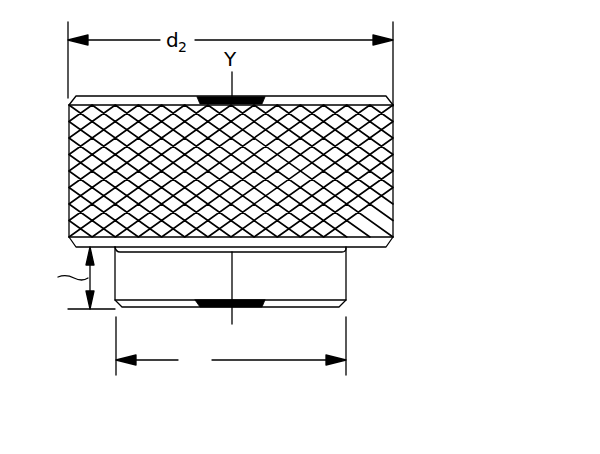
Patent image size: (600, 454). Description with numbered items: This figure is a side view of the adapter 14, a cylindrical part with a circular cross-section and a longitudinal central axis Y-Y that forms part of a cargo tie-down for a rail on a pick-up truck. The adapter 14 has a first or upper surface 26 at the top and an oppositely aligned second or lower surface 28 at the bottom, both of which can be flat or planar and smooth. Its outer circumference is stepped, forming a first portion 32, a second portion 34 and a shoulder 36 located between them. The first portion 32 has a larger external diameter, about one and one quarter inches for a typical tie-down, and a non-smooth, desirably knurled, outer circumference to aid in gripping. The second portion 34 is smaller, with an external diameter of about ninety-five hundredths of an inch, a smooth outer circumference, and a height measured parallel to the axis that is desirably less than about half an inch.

The adapter 14 is at (410, 51).
The first surface 26 is at (353, 97).
The first portion 32 is at (393, 180).
The shoulder 36 is at (348, 251).
The second portion 34 is at (347, 282).
The second surface 28 is at (320, 309).